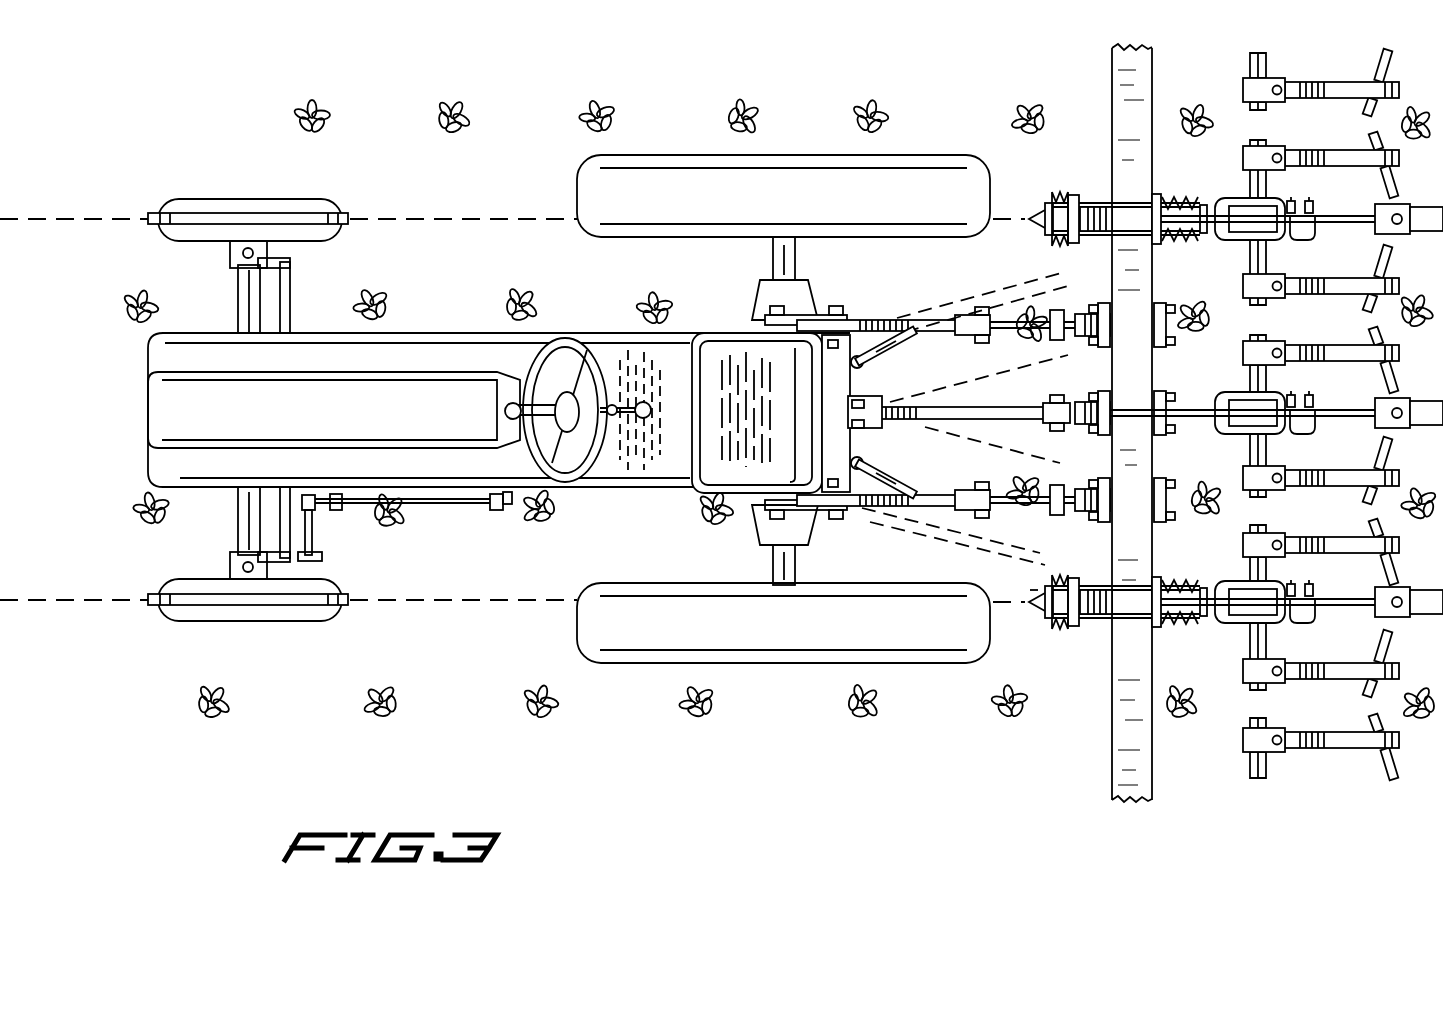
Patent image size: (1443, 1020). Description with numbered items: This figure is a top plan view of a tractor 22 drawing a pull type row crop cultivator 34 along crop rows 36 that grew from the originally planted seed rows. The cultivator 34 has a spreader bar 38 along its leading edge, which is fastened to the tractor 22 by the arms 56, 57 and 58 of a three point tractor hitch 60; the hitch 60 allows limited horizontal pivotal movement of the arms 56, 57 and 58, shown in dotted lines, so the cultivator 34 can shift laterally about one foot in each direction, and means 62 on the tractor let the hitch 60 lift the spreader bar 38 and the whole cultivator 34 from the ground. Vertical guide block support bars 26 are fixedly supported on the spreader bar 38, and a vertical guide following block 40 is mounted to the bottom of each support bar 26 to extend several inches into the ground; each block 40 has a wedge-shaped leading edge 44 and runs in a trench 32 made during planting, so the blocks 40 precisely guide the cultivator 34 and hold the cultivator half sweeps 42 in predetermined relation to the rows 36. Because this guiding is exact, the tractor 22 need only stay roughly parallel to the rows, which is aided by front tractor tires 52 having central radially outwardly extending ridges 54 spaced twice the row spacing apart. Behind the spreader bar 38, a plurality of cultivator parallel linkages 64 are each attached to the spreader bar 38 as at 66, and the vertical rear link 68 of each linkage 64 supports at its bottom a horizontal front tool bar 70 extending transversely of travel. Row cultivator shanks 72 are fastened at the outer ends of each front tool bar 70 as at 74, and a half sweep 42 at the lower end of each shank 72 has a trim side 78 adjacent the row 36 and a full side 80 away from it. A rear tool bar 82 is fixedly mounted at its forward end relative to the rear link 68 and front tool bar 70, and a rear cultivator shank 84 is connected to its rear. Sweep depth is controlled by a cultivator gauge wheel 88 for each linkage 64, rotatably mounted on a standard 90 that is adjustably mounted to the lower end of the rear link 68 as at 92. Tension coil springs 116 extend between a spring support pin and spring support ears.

The tractor 22 is at (385, 325).
The vertical guide block support bar 26 is at (1100, 205).
The trench 32 is at (428, 220).
The cultivator 34 is at (1239, 412).
The crop rows 36 is at (652, 120).
The spreader bar 38 is at (1128, 728).
The vertical guide following block 40 is at (1038, 215).
The cultivator half sweep 42 is at (1392, 104).
The wedge-shaped leading edge 44 is at (1038, 600).
The front tractor tire 52 is at (232, 200).
The ridge 54 is at (335, 212).
The arm 56 is at (1022, 410).
The arm 57 is at (1022, 485).
The arm 58 is at (900, 315).
The three point tractor hitch 60 is at (858, 525).
The lifting means 62 is at (930, 497).
The cultivator parallel linkage 64 is at (1200, 210).
The linkage attachment 66 is at (1163, 245).
The vertical rear link 68 is at (1278, 405).
The horizontal front tool bar 70 is at (1250, 65).
The row cultivator shank 72 is at (1340, 92).
The shank fastening 74 is at (1288, 82).
The trim side 78 is at (1370, 105).
The full side 80 is at (1390, 68).
The rear tool bar 82 is at (1368, 232).
The rear cultivator shank 84 is at (1418, 413).
The cultivator gauge wheel 88 is at (1233, 205).
The standard 90 is at (1305, 630).
The standard mounting 92 is at (1310, 203).
The tension coil spring 116 is at (1090, 250).